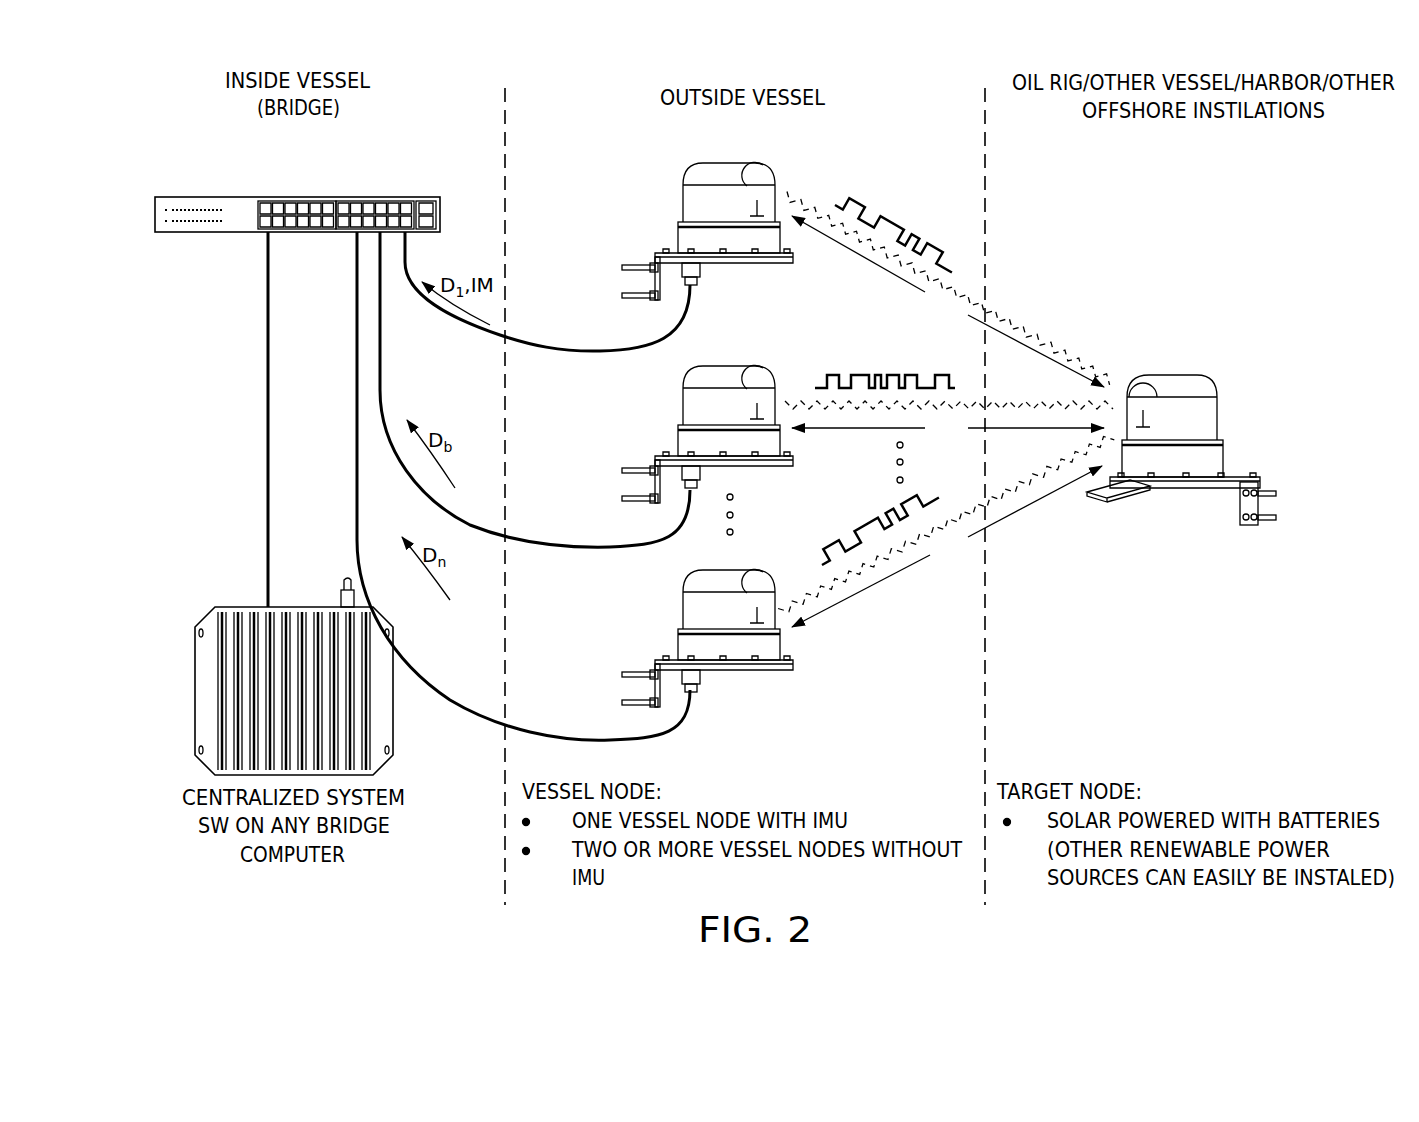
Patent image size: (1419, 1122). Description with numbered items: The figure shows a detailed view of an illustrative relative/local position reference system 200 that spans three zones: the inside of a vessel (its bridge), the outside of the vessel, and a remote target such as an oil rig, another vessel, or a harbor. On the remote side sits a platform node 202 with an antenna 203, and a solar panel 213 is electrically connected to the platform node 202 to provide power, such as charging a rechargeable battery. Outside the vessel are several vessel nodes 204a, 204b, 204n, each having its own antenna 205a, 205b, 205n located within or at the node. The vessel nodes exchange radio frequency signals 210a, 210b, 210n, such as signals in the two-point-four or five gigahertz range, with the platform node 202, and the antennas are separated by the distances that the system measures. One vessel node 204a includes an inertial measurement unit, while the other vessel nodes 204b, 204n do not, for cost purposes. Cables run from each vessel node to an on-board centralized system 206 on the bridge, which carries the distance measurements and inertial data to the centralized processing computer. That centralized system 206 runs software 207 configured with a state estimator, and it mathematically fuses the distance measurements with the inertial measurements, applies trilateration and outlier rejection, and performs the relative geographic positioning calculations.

The relative/local position reference system 200 is at (934, 83).
The platform node 202 is at (1248, 394).
The antenna 203 is at (1141, 384).
The vessel node 204a is at (652, 172).
The vessel node 204b is at (652, 408).
The vessel node 204n is at (655, 636).
The antenna 205a is at (778, 146).
The antenna 205b is at (778, 349).
The antenna 205n is at (767, 573).
The on-board centralized system 206 is at (197, 197).
The software 207 is at (195, 690).
The radio frequency signal 210a is at (910, 196).
The radio frequency signal 210b is at (875, 374).
The radio frequency signal 210n is at (855, 530).
The solar panel 213 is at (1103, 500).